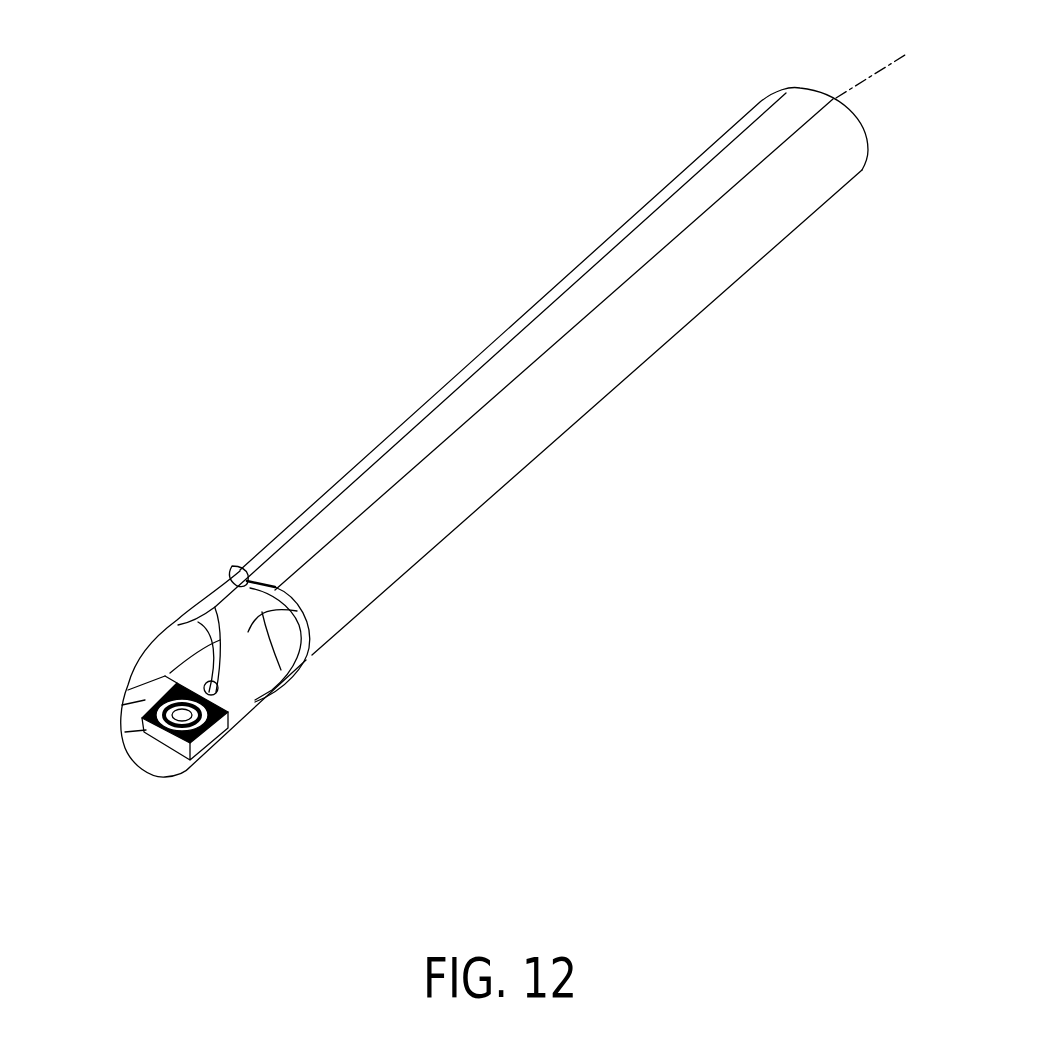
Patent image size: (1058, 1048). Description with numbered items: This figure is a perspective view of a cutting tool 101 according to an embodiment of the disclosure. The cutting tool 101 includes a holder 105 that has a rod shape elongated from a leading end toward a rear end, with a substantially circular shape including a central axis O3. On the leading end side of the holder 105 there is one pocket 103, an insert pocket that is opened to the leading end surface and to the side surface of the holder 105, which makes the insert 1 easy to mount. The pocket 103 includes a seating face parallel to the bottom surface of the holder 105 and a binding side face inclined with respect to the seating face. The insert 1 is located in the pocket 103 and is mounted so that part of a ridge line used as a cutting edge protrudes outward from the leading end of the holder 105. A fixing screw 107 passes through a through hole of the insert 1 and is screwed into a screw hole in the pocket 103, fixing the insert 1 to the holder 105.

The insert 1 is at (155, 733).
The cutting tool 101 is at (312, 346).
The pocket 103 is at (172, 750).
The holder 105 is at (478, 472).
The fixing screw 107 is at (170, 680).
The central axis O3 is at (888, 58).